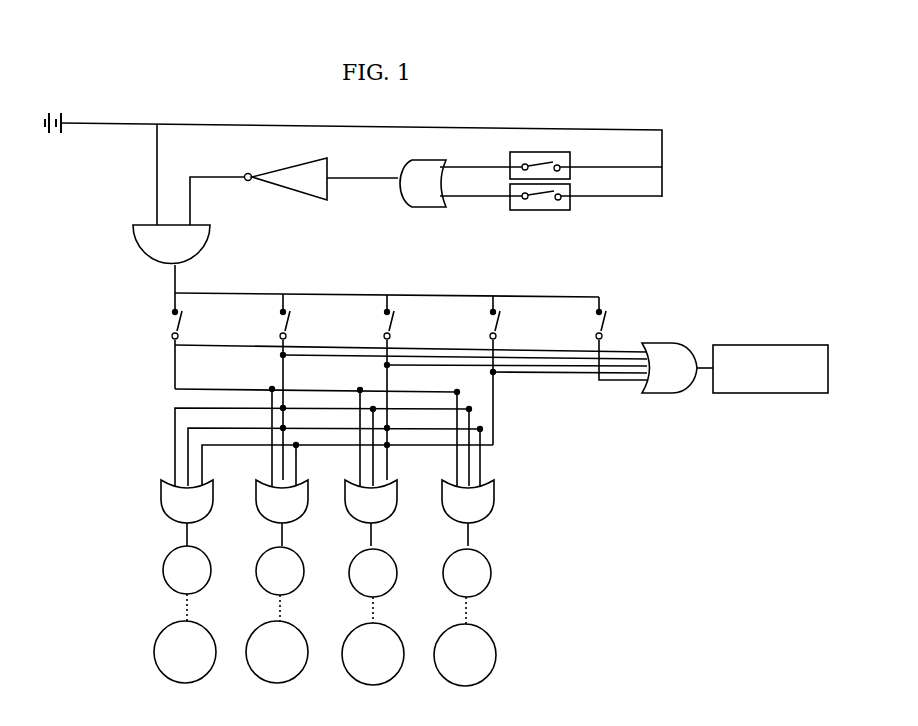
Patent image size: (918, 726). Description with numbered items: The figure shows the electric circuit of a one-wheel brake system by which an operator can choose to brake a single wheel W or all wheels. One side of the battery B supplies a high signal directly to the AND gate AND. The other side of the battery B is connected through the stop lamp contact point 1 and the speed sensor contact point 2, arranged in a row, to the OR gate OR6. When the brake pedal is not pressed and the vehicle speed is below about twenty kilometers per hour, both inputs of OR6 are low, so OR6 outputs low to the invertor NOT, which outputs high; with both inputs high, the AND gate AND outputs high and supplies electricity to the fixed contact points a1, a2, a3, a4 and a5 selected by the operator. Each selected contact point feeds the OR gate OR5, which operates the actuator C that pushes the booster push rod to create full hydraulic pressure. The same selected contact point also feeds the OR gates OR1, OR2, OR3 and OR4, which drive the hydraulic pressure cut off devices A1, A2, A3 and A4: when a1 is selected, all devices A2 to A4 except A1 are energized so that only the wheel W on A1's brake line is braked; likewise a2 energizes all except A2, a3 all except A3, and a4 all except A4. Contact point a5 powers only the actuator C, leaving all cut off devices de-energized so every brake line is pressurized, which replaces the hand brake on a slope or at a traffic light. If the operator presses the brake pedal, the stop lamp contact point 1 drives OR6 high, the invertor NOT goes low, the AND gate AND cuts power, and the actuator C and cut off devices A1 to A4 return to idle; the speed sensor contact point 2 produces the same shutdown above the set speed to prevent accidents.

The stop lamp contact point 1 is at (540, 152).
The speed sensor contact point 2 is at (540, 210).
The battery B is at (52, 115).
The actuator C is at (770, 369).
The AND gate AND is at (171, 244).
The invertor NOT is at (286, 179).
The OR gate OR1 is at (187, 501).
The OR gate OR2 is at (282, 501).
The OR gate OR3 is at (371, 501).
The OR gate OR4 is at (468, 501).
The OR gate OR5 is at (669, 368).
The OR gate OR6 is at (423, 183).
The fixed contact point a1 is at (187, 341).
The fixed contact point a2 is at (295, 387).
The fixed contact point a3 is at (399, 387).
The fixed contact point a4 is at (505, 370).
The fixed contact point a5 is at (621, 338).
The hydraulic pressure cut off device A1 is at (187, 570).
The hydraulic pressure cut off device A2 is at (280, 571).
The hydraulic pressure cut off device A3 is at (373, 573).
The hydraulic pressure cut off device A4 is at (467, 573).
The wheel W is at (325, 653).